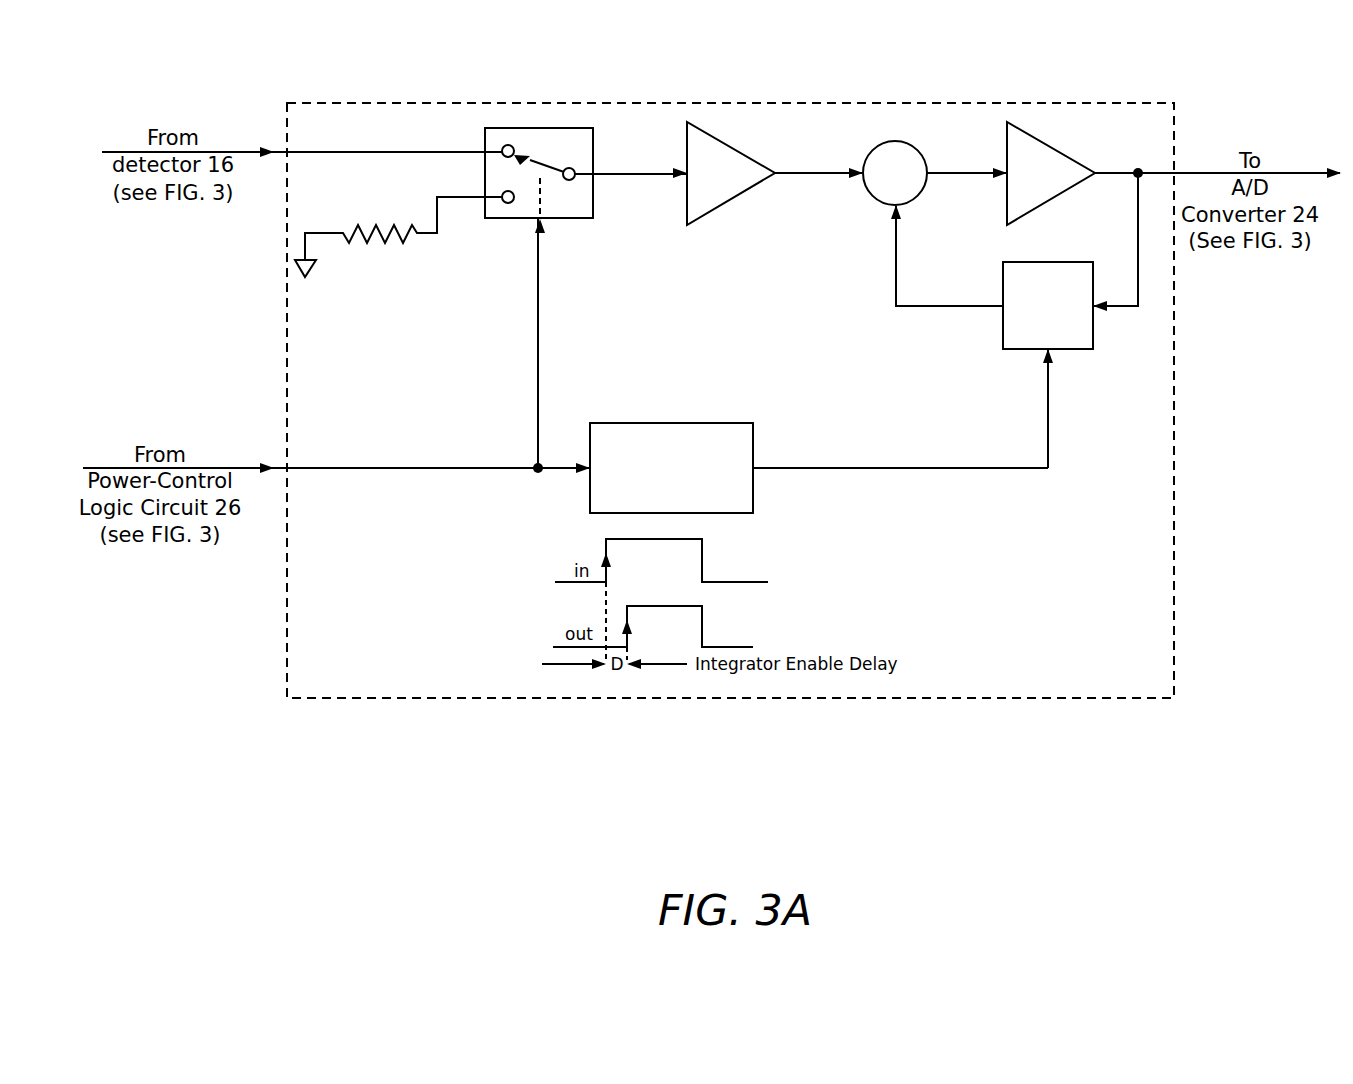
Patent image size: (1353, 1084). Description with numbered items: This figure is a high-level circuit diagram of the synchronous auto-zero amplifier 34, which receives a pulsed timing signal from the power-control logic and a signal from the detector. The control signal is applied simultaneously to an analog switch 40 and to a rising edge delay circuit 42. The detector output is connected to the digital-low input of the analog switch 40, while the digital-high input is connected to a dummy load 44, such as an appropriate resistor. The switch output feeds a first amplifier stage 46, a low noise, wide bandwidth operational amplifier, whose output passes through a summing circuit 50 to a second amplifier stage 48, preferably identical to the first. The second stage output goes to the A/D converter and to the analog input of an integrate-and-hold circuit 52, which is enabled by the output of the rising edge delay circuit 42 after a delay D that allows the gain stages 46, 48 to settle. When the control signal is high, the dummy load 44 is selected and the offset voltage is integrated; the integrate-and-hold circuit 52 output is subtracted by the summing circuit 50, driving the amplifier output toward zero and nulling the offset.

The synchronous auto-zero amplifier 34 is at (976, 698).
The analog switch 40 is at (565, 213).
The rising edge delay circuit 42 is at (682, 423).
The dummy load 44 is at (382, 250).
The first amplifier stage 46 is at (700, 207).
The second amplifier stage 48 is at (1042, 140).
The summing circuit 50 is at (866, 189).
The integrate-and-hold circuit 52 is at (1020, 345).